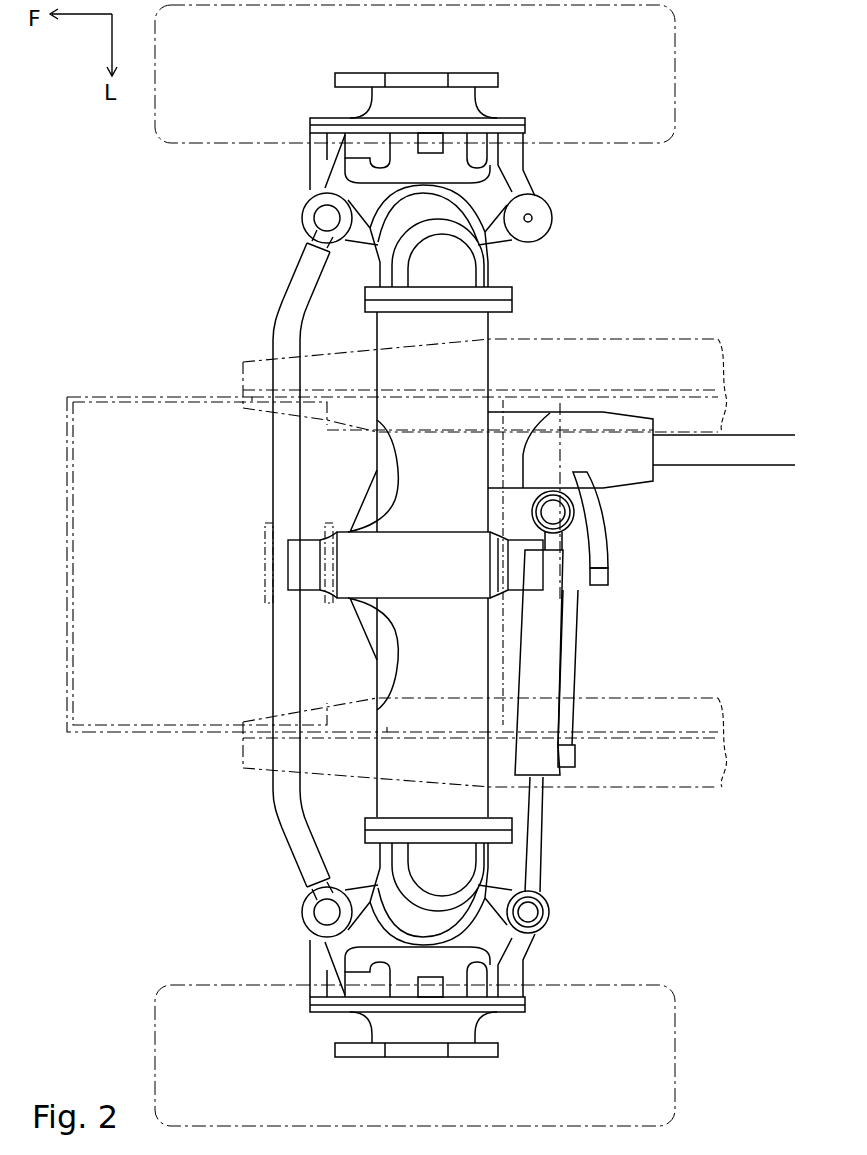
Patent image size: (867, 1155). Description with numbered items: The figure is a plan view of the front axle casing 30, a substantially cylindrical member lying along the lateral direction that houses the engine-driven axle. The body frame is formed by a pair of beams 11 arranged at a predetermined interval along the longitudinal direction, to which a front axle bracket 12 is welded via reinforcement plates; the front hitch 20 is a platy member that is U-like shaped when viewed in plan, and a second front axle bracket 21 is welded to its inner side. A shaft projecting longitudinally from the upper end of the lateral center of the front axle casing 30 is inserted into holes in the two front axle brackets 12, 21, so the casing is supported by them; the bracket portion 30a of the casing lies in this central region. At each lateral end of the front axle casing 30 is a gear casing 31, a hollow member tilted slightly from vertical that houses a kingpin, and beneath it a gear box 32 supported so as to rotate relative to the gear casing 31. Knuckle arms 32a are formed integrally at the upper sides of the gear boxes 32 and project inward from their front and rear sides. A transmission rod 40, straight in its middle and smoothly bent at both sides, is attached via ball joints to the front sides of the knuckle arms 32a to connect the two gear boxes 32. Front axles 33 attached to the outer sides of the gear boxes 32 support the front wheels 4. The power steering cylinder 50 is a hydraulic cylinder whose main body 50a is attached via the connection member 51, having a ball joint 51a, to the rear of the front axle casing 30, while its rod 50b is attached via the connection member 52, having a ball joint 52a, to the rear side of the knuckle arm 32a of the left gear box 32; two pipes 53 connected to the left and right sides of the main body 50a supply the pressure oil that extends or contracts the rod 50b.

The front wheel 4 is at (691, 69).
The beam 11 is at (706, 328).
The front axle bracket 12 is at (572, 456).
The front hitch 20 is at (110, 382).
The front axle bracket 21 is at (254, 574).
The front axle casing 30 is at (364, 331).
The bracket portion of axle housing 30a is at (545, 418).
The gear casing 31 is at (556, 238).
The gear box 32 is at (560, 160).
The knuckle arm 32a is at (347, 185).
The front axle 33 is at (498, 80).
The transmission rod 40 is at (300, 290).
The power steering cylinder 50 is at (589, 721).
The main body 50a is at (545, 633).
The rod 50b is at (540, 862).
The connection member 51 is at (586, 526).
The ball joint 51a is at (560, 508).
The connection member 52 is at (562, 916).
The ball joint 52a is at (535, 918).
The pipe 53 is at (600, 555).